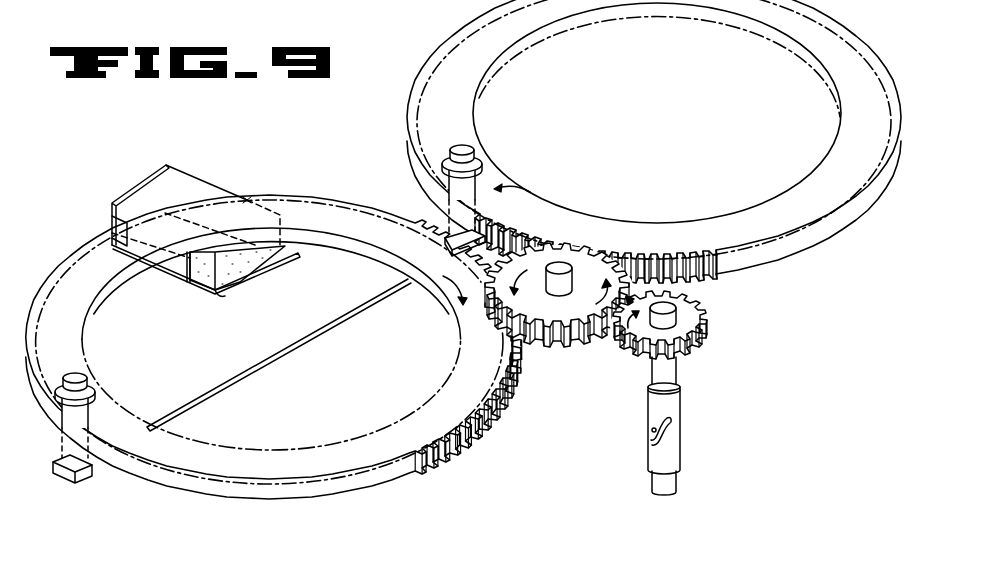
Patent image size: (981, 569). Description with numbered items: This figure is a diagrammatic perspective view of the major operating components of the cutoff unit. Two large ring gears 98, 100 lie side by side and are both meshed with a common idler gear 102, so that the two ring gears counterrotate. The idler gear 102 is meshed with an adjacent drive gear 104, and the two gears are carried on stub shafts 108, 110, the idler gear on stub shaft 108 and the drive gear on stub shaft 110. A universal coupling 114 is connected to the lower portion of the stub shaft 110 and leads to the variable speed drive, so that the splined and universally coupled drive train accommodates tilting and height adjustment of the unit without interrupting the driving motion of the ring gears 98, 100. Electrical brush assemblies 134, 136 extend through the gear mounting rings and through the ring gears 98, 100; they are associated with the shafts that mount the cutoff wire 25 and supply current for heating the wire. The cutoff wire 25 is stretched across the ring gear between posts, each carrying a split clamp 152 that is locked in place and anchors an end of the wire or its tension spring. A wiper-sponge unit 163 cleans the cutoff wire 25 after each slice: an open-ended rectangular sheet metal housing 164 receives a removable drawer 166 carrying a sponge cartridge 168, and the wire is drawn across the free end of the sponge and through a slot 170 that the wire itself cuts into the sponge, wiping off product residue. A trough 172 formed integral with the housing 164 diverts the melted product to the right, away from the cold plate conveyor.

The cutoff wire 25 is at (253, 366).
The ring gear 98 is at (465, 364).
The ring gear 100 is at (562, 214).
The idler gear 102 is at (548, 345).
The drive gear 104 is at (695, 325).
The stub shaft 108 is at (565, 262).
The stub shaft 110 is at (668, 308).
The universal coupling 114 is at (679, 426).
The electrical brush assembly 134 is at (82, 377).
The electrical brush assembly 136 is at (471, 149).
The split clamp 152 is at (448, 233).
The wiper-sponge unit 163 is at (197, 174).
The sheet metal housing 164 is at (218, 186).
The removable drawer 166 is at (110, 229).
The sponge cartridge 168 is at (197, 285).
The slot 170 is at (222, 262).
The trough 172 is at (282, 268).